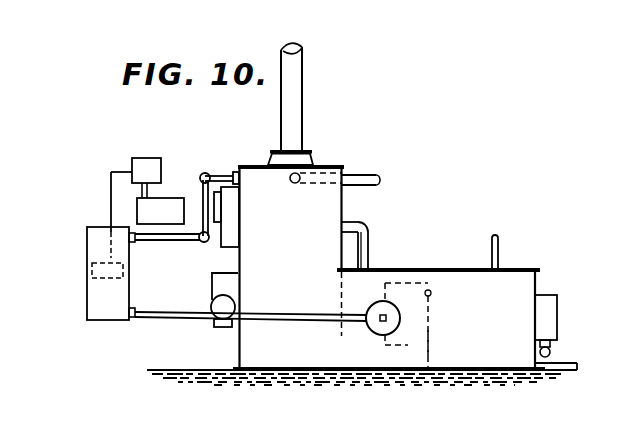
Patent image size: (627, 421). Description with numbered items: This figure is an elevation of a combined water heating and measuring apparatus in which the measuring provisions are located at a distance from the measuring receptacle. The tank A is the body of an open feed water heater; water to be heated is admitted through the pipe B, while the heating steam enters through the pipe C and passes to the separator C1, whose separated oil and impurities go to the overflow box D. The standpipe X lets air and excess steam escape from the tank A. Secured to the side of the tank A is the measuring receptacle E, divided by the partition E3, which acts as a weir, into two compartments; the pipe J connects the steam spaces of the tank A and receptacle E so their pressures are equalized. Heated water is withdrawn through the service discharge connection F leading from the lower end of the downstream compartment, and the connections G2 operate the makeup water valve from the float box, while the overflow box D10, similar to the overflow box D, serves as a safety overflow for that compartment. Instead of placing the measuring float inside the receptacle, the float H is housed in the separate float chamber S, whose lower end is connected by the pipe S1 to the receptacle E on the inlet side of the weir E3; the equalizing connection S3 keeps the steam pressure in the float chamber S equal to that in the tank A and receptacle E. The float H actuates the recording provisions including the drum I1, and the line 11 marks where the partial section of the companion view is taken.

The tank A is at (389, 268).
The standpipe X is at (298, 100).
The pipe B is at (365, 172).
The equalizing connection S3 is at (222, 172).
The pipe C is at (197, 231).
The separator C1 is at (224, 244).
The overflow box D is at (210, 293).
The pipe S1 is at (295, 312).
The section line 11 is at (411, 318).
The measuring receptacle E is at (438, 318).
The partition E3 is at (430, 323).
The connections G2 is at (499, 250).
The pipe J is at (376, 217).
The overflow box D10 is at (557, 315).
The service discharge connection F is at (568, 363).
The float chamber S is at (87, 265).
The float H is at (111, 193).
The drum I1 is at (152, 160).